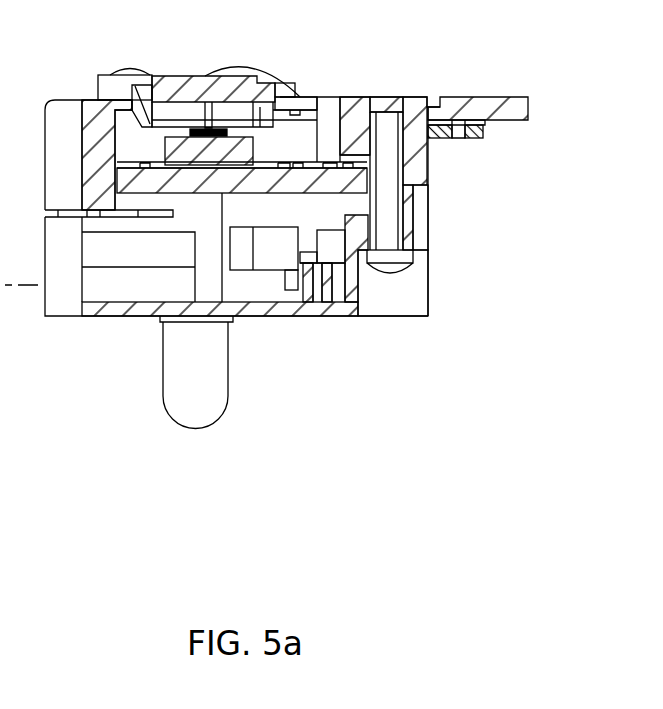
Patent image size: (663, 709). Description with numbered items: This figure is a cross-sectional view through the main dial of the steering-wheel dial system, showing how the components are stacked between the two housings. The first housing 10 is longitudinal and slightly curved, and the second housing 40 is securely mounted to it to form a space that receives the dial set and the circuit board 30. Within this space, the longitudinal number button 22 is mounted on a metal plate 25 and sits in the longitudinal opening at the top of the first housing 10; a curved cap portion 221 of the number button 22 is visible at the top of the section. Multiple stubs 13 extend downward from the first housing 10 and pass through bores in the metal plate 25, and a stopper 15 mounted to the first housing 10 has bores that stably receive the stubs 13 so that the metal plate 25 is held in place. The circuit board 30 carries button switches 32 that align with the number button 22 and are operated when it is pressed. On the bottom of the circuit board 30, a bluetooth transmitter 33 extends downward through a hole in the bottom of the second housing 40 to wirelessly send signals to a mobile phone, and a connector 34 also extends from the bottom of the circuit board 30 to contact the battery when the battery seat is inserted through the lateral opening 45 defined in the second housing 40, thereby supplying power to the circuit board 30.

The first housing 10 is at (452, 108).
The stubs 13 is at (457, 140).
The stopper 15 is at (480, 140).
The number button 22 is at (208, 106).
The lens 221 is at (238, 76).
The metal plate 25 is at (150, 87).
The circuit board 30 is at (303, 175).
The button switches 32 is at (237, 152).
The bluetooth transmitter 33 is at (212, 408).
The connector 34 is at (275, 257).
The second housing 40 is at (100, 308).
The lateral opening 45 is at (88, 278).